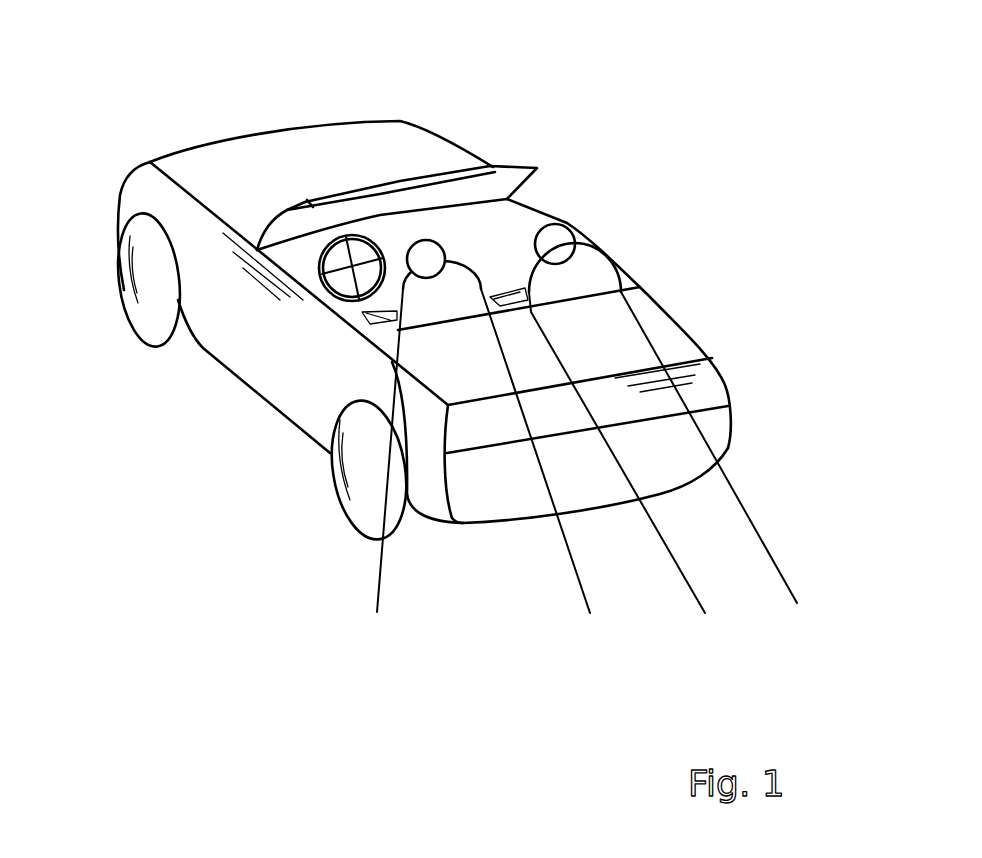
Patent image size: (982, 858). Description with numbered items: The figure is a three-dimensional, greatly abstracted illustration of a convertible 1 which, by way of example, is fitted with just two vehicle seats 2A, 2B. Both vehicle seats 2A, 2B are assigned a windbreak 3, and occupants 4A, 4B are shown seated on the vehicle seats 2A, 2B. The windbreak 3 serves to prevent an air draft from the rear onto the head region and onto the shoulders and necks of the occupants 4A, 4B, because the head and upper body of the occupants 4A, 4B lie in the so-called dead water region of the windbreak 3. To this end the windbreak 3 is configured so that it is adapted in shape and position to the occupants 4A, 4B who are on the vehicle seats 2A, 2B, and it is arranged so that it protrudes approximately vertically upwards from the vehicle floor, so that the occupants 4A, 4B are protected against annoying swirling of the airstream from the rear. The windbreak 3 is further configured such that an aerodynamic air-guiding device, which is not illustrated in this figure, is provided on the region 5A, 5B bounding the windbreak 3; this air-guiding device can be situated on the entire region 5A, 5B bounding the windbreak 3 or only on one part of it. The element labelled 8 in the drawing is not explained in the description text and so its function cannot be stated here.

The convertible 1 is at (560, 104).
The vehicle seat 2A is at (378, 317).
The vehicle seat 2B is at (528, 283).
The windbreak 3 is at (583, 281).
The occupant 4A is at (423, 255).
The occupant 4B is at (552, 237).
The region bounding the windbreak 5A is at (486, 469).
The region bounding the windbreak 5B is at (676, 471).
The windshield frame 8 is at (445, 172).